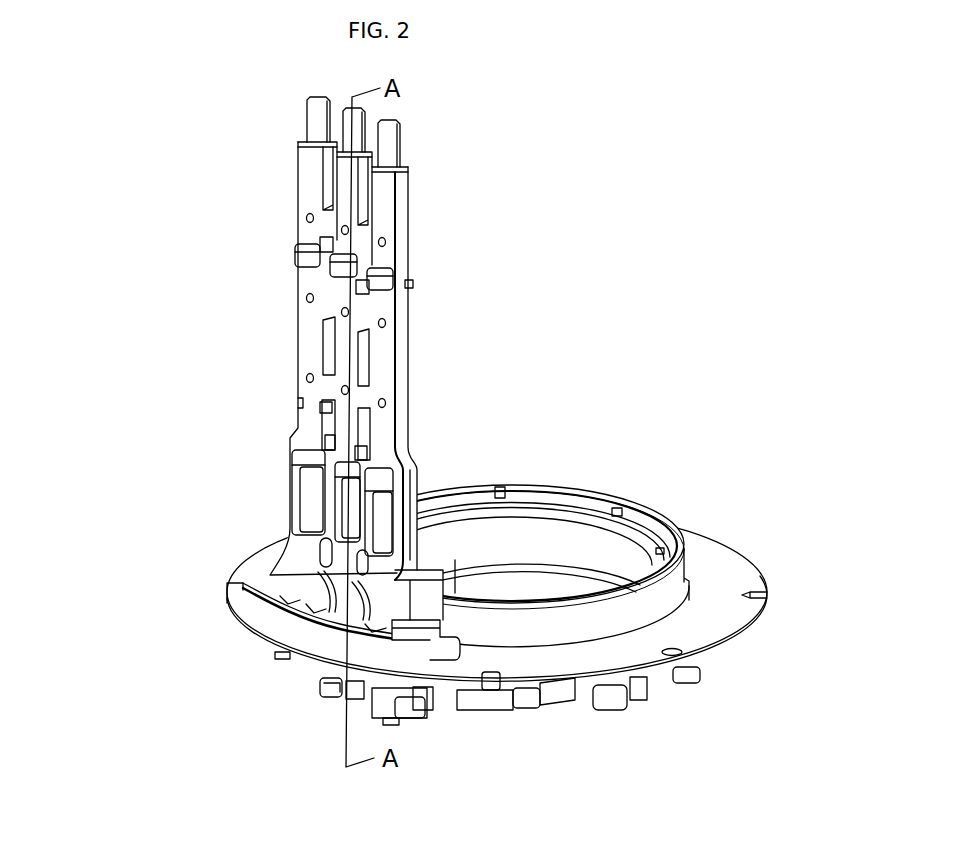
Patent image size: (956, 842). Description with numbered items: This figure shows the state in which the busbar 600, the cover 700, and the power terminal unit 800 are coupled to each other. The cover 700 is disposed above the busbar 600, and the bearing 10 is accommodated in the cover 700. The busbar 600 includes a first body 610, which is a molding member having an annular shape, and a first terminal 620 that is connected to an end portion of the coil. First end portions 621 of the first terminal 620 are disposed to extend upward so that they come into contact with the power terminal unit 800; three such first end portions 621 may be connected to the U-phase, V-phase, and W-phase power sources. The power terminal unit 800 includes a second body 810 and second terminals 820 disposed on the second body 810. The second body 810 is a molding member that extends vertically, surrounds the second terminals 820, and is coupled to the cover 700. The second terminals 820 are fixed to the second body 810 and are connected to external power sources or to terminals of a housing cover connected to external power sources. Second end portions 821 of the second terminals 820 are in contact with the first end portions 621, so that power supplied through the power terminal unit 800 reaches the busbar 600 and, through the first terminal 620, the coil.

The bearing 10 is at (646, 538).
The busbar 600 is at (547, 734).
The first body 610 is at (568, 695).
The first terminal 620 is at (344, 556).
The first end portions 621 is at (380, 526).
The cover 700 is at (210, 603).
The power terminal unit 800 is at (284, 326).
The second body 810 is at (312, 193).
The second terminals 820 is at (387, 148).
The second end portions 821 is at (372, 470).